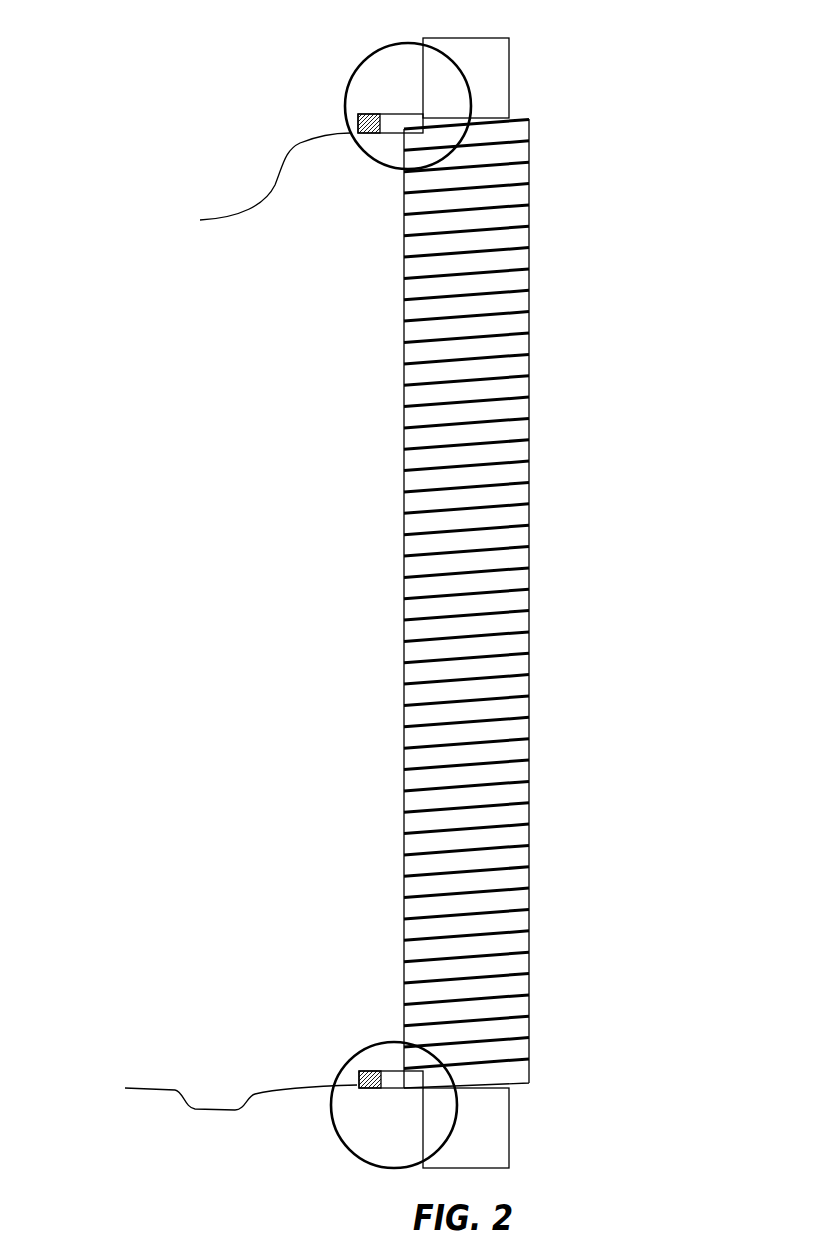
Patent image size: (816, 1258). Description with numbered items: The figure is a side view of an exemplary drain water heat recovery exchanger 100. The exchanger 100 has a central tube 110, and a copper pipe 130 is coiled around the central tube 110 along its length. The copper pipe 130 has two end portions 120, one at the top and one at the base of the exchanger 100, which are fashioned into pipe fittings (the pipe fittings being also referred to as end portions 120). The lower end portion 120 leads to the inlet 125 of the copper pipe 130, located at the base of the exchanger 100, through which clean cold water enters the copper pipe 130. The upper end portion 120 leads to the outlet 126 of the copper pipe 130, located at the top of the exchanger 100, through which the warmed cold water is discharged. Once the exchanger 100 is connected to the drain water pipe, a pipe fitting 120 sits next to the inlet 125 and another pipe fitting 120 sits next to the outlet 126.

The drain water heat recovery exchanger 100 is at (570, 747).
The central tube 110 is at (480, 66).
The end portion 120 is at (355, 120).
The inlet 125 is at (357, 1085).
The outlet 126 is at (355, 123).
The copper pipe 130 is at (477, 450).